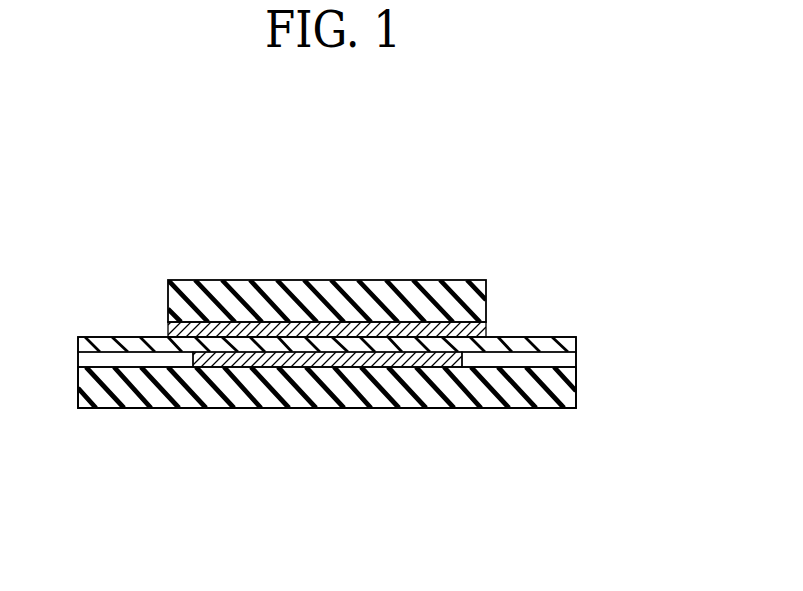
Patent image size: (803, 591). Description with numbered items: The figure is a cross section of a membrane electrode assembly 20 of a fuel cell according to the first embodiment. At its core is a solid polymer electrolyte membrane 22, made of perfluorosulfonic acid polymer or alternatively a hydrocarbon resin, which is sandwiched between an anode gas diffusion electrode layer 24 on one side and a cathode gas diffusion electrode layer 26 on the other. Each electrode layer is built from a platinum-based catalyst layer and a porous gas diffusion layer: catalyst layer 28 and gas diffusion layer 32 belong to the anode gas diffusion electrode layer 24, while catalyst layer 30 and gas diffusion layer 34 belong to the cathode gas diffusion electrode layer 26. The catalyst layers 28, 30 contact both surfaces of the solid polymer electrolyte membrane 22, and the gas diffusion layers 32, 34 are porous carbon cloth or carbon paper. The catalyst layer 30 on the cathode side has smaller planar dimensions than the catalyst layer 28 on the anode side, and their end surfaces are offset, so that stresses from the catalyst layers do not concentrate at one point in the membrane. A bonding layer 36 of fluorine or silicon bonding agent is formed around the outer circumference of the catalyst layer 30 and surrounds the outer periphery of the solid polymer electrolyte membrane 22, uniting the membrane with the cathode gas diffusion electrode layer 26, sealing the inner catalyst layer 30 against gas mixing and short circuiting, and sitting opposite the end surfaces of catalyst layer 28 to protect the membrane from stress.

The piezoelectric device 20 is at (600, 197).
The solid polymer electrolyte membrane 22 is at (557, 334).
The anode gas diffusion electrode layer 24 is at (279, 264).
The cathode gas diffusion electrode layer 26 is at (226, 437).
The catalyst layer 28 is at (413, 330).
The catalyst layer 30 is at (303, 360).
The gas diffusion layer 32 is at (315, 280).
The gas diffusion layer 34 is at (375, 393).
The bonding layer 36 is at (130, 357).